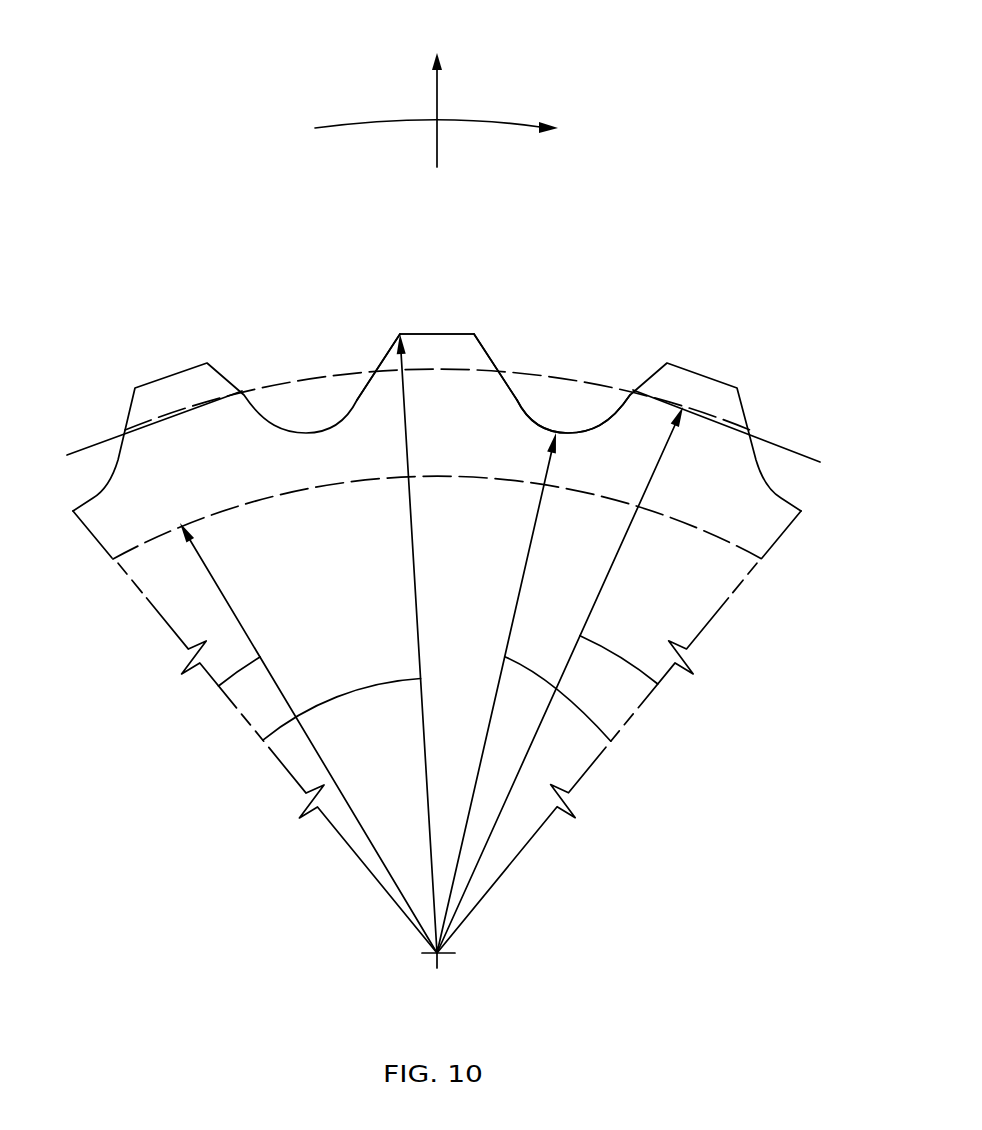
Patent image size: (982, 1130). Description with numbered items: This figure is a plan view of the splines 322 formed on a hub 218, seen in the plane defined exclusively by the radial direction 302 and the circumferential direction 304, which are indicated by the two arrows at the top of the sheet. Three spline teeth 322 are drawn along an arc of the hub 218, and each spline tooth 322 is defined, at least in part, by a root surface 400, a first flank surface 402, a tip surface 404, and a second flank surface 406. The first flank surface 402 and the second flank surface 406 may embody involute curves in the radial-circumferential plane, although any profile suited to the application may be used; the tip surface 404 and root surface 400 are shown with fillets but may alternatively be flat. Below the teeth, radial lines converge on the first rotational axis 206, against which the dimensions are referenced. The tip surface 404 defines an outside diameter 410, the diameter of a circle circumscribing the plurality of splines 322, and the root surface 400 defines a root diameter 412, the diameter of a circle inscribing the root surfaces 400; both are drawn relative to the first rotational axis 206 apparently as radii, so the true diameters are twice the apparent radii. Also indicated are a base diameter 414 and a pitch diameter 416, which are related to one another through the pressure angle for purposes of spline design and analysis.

The first rotational axis 206 is at (437, 953).
The hub 218 is at (706, 138).
The radial direction 302 is at (436, 94).
The circumferential direction 304 is at (456, 132).
The spline tooth 322 is at (375, 278).
The root surface 400 is at (567, 432).
The first flank surface 402 is at (493, 352).
The tip surface 404 is at (435, 333).
The second flank surface 406 is at (363, 390).
The outside diameter 410 is at (263, 740).
The root diameter 412 is at (611, 741).
The base diameter 414 is at (218, 686).
The pitch diameter 416 is at (658, 684).